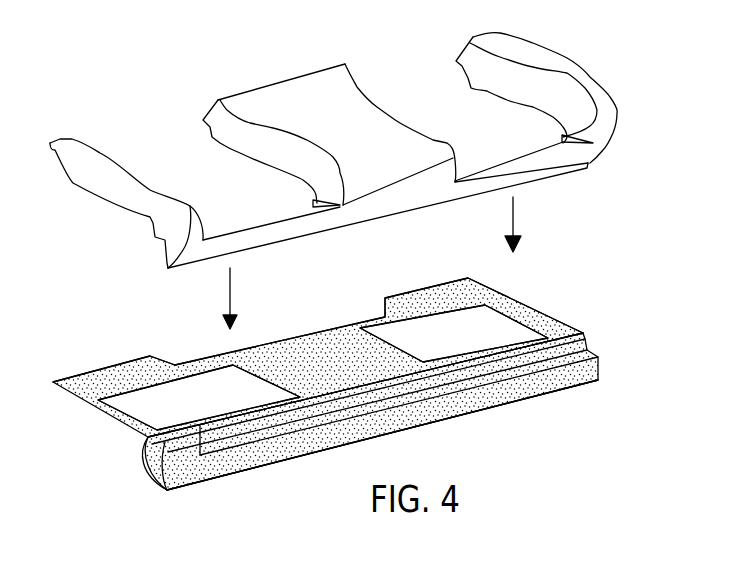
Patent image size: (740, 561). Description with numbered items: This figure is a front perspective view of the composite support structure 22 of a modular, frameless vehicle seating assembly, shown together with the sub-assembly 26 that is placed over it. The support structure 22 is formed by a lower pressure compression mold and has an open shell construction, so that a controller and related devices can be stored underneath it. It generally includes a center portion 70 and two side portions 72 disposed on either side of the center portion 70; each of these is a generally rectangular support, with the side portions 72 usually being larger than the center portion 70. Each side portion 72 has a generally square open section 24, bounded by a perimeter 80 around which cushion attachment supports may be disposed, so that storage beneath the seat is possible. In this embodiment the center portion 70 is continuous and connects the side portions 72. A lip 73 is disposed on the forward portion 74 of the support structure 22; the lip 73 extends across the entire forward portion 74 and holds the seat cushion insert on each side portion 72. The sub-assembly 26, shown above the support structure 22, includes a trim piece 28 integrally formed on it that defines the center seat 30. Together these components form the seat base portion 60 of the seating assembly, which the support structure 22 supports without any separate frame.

The composite support structure 22 is at (460, 365).
The open section 24 is at (143, 408).
The sub-assembly 26 is at (572, 85).
The trim piece 28 is at (343, 113).
The center seat 30 is at (315, 93).
The seat base portion 60 is at (128, 452).
The center portion 70 is at (356, 371).
The side portion 72 is at (143, 473).
The lip 73 is at (293, 430).
The forward portion 74 is at (197, 450).
The perimeter 80 is at (98, 415).